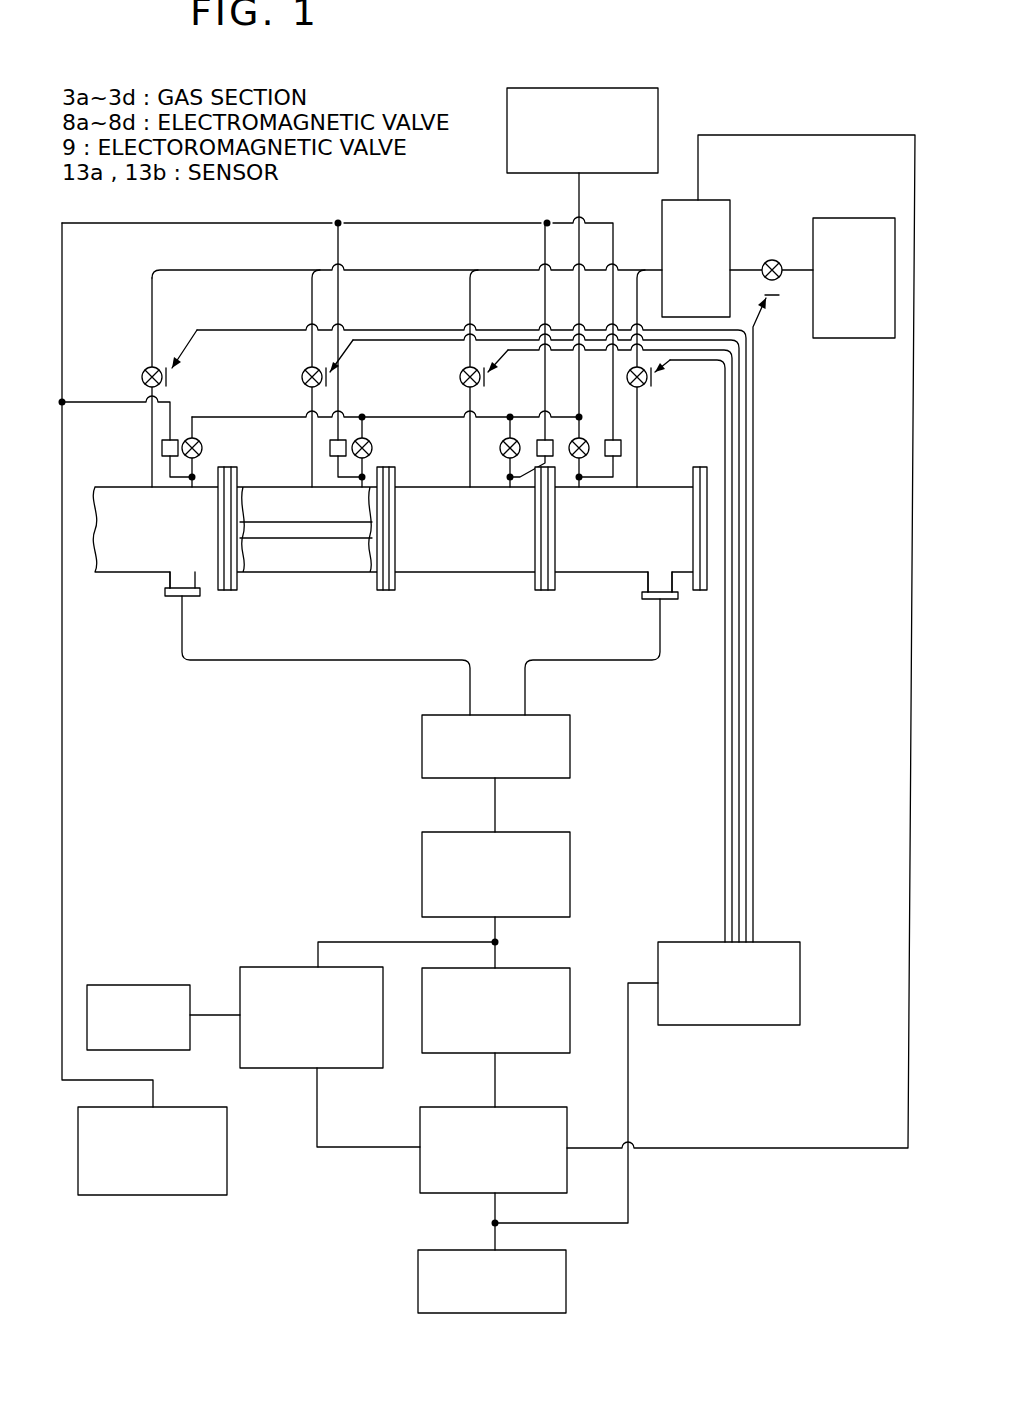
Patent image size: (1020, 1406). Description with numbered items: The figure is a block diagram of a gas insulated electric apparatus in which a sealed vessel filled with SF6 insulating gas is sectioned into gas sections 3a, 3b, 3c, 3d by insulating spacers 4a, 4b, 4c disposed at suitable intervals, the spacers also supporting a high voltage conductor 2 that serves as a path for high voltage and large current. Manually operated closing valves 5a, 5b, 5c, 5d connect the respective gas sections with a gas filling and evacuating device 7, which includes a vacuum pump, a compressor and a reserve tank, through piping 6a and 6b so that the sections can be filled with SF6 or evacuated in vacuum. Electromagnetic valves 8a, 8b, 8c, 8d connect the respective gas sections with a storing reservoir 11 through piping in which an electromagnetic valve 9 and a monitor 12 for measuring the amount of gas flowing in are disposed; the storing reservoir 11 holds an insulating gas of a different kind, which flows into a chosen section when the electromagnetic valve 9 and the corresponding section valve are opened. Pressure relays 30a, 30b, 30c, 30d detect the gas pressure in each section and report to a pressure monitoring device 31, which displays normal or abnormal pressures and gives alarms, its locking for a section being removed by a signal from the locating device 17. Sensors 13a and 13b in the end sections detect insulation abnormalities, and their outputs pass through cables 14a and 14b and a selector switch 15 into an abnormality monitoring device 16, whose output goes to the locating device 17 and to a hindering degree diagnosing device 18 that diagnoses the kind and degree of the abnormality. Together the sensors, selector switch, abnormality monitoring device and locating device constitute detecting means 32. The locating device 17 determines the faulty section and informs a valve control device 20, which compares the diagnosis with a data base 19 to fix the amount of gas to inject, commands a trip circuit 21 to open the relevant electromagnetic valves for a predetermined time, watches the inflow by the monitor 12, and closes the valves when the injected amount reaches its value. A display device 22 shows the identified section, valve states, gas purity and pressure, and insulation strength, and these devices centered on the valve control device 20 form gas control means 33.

The high voltage conductor 2 is at (325, 540).
The gas section 3a is at (113, 567).
The gas section 3b is at (272, 575).
The gas section 3c is at (458, 575).
The gas section 3d is at (607, 575).
The insulating spacer 4a is at (224, 592).
The insulating spacer 4b is at (385, 592).
The insulating spacer 4c is at (545, 592).
The closing valve 5a is at (203, 445).
The closing valve 5b is at (373, 446).
The closing valve 5c is at (500, 455).
The closing valve 5d is at (581, 437).
The piping 6a is at (459, 633).
The piping 6b is at (579, 193).
The gas filling and evacuating device 7 is at (658, 95).
The electromagnetic valve 8a is at (145, 370).
The electromagnetic valve 8b is at (305, 370).
The electromagnetic valve 8c is at (462, 372).
The electromagnetic valve 8d is at (640, 388).
The electromagnetic valve 9 is at (770, 260).
The storing reservoir 11 is at (843, 218).
The monitor 12 is at (722, 200).
The sensor 13a is at (165, 600).
The sensor 13b is at (672, 600).
The cable 14a is at (325, 663).
The cable 14b is at (625, 663).
The selector switch 15 is at (570, 752).
The abnormality monitoring device 16 is at (570, 865).
The locating device 17 is at (570, 993).
The hindering degree diagnosing device 18 is at (258, 967).
The data base 19 is at (137, 985).
The valve control device 20 is at (567, 1115).
The trip circuit 21 is at (800, 968).
The display device 22 is at (566, 1278).
The pressure relay 30a is at (162, 448).
The pressure relay 30b is at (342, 438).
The pressure relay 30c is at (540, 440).
The pressure relay 30d is at (622, 448).
The pressure monitoring device 31 is at (227, 1167).
The detecting means 32 is at (252, 772).
The gas control means 33 is at (767, 1272).